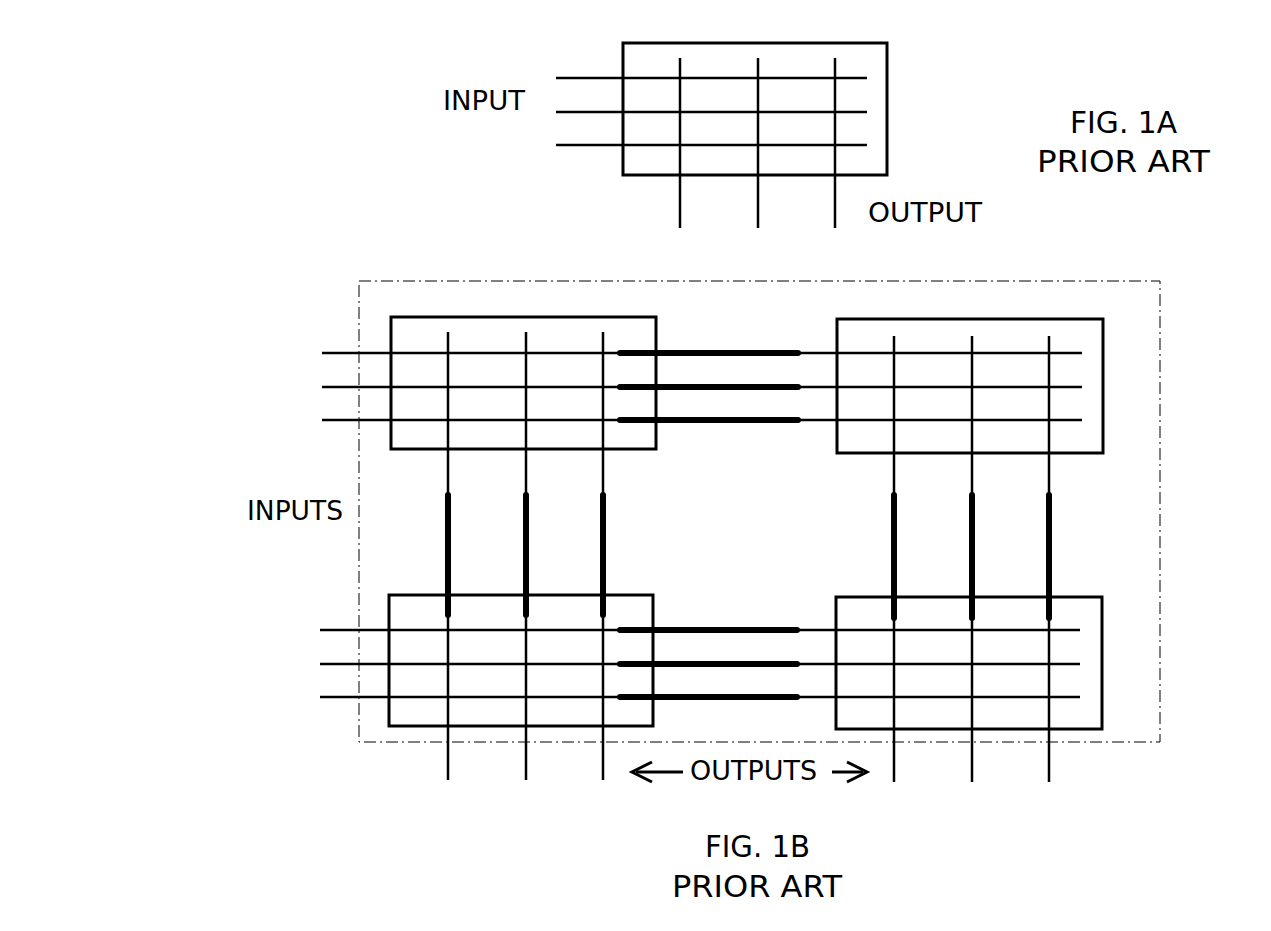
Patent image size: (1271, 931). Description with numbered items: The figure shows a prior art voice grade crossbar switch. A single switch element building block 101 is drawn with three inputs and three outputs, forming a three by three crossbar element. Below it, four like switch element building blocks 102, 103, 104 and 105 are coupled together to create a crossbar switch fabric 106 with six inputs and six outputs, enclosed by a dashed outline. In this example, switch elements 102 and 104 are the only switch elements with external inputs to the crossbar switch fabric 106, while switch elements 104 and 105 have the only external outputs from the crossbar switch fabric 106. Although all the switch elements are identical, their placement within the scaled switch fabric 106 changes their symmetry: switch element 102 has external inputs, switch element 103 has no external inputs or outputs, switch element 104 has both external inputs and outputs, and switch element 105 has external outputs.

In FIG. 1A, the switch element building block 101 is at (903, 97).
In FIG. 1B, the switch element 102 is at (471, 312).
In FIG. 1B, the switch element 103 is at (1053, 313).
In FIG. 1B, the switch element 104 is at (390, 594).
In FIG. 1B, the switch element 105 is at (1107, 623).
In FIG. 1B, the crossbar switch fabric 106 is at (1158, 399).